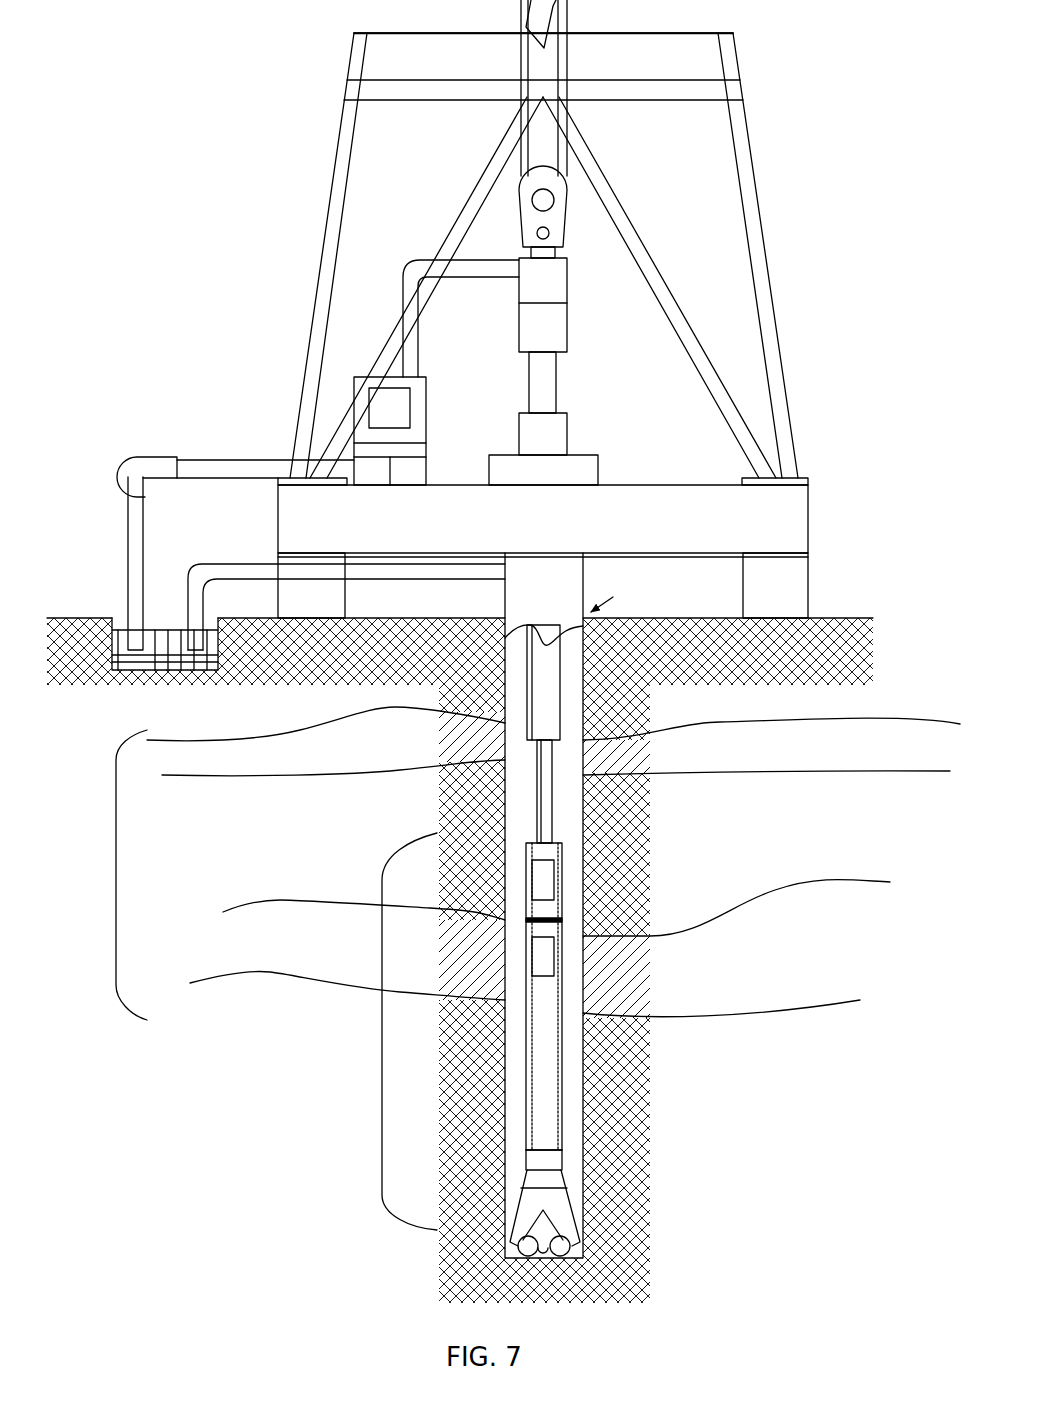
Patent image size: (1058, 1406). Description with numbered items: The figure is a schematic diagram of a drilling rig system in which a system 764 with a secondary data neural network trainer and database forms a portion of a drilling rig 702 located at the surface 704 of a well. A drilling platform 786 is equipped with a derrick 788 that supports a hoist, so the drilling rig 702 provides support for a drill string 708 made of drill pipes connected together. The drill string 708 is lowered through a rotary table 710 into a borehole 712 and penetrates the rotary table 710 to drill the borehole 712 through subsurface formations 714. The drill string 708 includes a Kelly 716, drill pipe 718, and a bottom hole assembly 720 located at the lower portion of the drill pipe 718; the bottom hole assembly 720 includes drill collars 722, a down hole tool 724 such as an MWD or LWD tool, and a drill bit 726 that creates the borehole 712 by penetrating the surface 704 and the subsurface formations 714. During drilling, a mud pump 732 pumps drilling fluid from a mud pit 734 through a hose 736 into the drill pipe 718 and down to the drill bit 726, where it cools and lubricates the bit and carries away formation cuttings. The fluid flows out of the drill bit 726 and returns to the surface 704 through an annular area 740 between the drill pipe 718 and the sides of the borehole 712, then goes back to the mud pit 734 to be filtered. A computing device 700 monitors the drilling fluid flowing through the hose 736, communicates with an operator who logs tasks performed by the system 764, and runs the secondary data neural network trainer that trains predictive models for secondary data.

The system 764 is at (206, 110).
The derrick 788 is at (753, 172).
The drilling rig 702 is at (776, 303).
The computing device 700 is at (353, 397).
The Kelly 716 is at (557, 383).
The rotary table 710 is at (598, 476).
The drilling platform 786 is at (808, 500).
The mud pump 732 is at (124, 462).
The hose 736 is at (240, 460).
The mud pit 734 is at (165, 658).
The surface 704 is at (873, 618).
The subsurface formations 714 is at (116, 873).
The bottom hole assembly 720 is at (382, 1033).
The drill string 708 is at (566, 1078).
The drill collars 722 is at (560, 700).
The drill pipe 718 is at (552, 803).
The annular area 740 is at (565, 850).
The down hole tool 724 is at (548, 1137).
The borehole 712 is at (573, 1131).
The drill bit 726 is at (556, 1207).